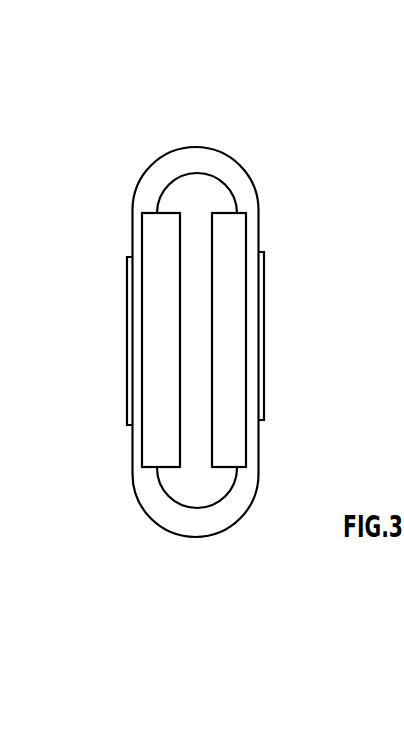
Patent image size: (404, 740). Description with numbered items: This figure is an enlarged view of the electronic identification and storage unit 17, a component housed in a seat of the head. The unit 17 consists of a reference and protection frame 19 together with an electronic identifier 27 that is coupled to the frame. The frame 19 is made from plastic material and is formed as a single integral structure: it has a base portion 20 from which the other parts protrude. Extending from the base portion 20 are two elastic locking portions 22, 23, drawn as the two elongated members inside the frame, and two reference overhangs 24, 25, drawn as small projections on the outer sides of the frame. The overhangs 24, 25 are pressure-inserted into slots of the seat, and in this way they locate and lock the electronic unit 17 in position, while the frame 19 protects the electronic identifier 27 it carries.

The electronic identification and storage unit 17 is at (186, 290).
The reference and protection frame 19 is at (261, 482).
The base portion 20 is at (158, 498).
The elastic locking portion 22 is at (232, 252).
The elastic locking portion 23 is at (157, 242).
The reference overhang 24 is at (267, 317).
The reference overhang 25 is at (125, 300).
The electronic identifier 27 is at (204, 202).